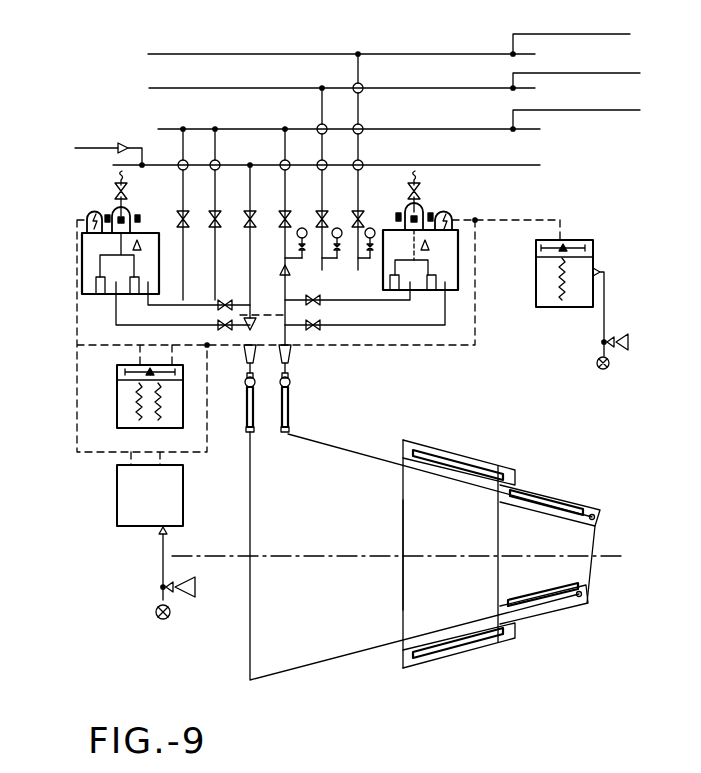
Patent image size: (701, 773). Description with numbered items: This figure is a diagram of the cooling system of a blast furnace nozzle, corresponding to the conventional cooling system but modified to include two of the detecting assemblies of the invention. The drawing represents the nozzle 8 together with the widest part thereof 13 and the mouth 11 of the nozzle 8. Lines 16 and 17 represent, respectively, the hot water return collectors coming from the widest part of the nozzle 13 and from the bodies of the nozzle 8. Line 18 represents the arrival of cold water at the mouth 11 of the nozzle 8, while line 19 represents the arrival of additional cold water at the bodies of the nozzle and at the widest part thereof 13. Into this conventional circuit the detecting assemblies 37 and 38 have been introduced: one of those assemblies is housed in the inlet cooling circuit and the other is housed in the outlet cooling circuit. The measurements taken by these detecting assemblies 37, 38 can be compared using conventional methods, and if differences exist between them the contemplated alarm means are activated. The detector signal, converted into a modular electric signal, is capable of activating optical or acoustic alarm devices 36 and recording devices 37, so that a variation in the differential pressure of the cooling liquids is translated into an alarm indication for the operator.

The hot water return collector line 16 is at (389, 33).
The hot water return collector line 17 is at (395, 69).
The additional cold water arrival line 19 is at (399, 123).
The cold water arrival line 18 is at (304, 159).
The detecting assembly 37 is at (580, 275).
The detecting assembly 38 is at (125, 410).
The alarm device 36 is at (614, 350).
The mouth of the nozzle 11 is at (603, 526).
The nozzle 8 is at (563, 575).
The widest part of the nozzle 13 is at (413, 618).